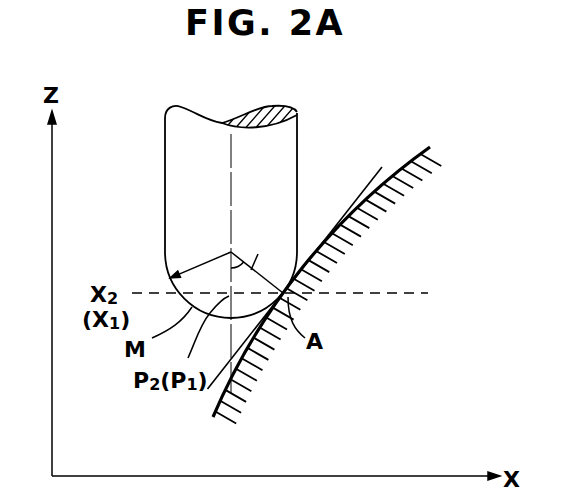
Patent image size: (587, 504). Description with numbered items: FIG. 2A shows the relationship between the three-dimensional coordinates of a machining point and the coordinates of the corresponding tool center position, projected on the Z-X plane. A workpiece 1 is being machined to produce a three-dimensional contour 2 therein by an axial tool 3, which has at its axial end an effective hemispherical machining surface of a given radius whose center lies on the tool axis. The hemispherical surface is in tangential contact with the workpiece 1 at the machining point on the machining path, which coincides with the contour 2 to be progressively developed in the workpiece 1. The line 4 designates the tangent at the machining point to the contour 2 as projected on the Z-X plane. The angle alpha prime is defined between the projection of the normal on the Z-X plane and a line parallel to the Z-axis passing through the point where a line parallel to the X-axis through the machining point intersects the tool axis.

The workpiece 1 is at (407, 189).
The three-dimensional contour 2 is at (405, 172).
The axial tool 3 is at (297, 126).
The tangent 4 is at (368, 188).